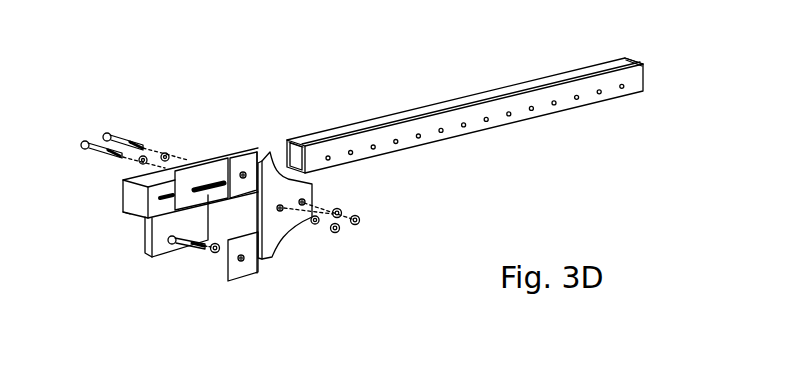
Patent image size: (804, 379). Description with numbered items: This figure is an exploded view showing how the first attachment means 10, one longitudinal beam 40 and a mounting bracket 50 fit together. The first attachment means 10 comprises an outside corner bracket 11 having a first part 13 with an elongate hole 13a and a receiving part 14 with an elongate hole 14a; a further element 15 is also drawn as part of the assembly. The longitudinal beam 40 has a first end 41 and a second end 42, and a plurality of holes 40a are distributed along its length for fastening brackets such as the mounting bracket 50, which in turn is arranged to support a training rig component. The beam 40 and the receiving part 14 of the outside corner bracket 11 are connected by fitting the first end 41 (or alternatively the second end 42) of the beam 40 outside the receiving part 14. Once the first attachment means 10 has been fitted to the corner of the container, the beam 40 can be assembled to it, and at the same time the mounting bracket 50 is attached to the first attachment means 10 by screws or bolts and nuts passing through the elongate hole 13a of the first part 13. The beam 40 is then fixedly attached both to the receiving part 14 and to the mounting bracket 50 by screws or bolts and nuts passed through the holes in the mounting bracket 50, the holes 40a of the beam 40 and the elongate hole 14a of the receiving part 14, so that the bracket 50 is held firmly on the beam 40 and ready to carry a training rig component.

The first attachment means 10 is at (133, 275).
The outside corner bracket 11 is at (132, 205).
The first part 13 is at (170, 245).
The elongate hole 13a is at (175, 238).
The receiving part 14 is at (192, 160).
The elongate hole 14a is at (210, 170).
The lower bracket plate 15 is at (145, 228).
The longitudinal beam 40 is at (512, 72).
The holes 40a is at (465, 122).
The first end 41 is at (308, 145).
The second end 42 is at (620, 62).
The mounting bracket 50 is at (276, 236).